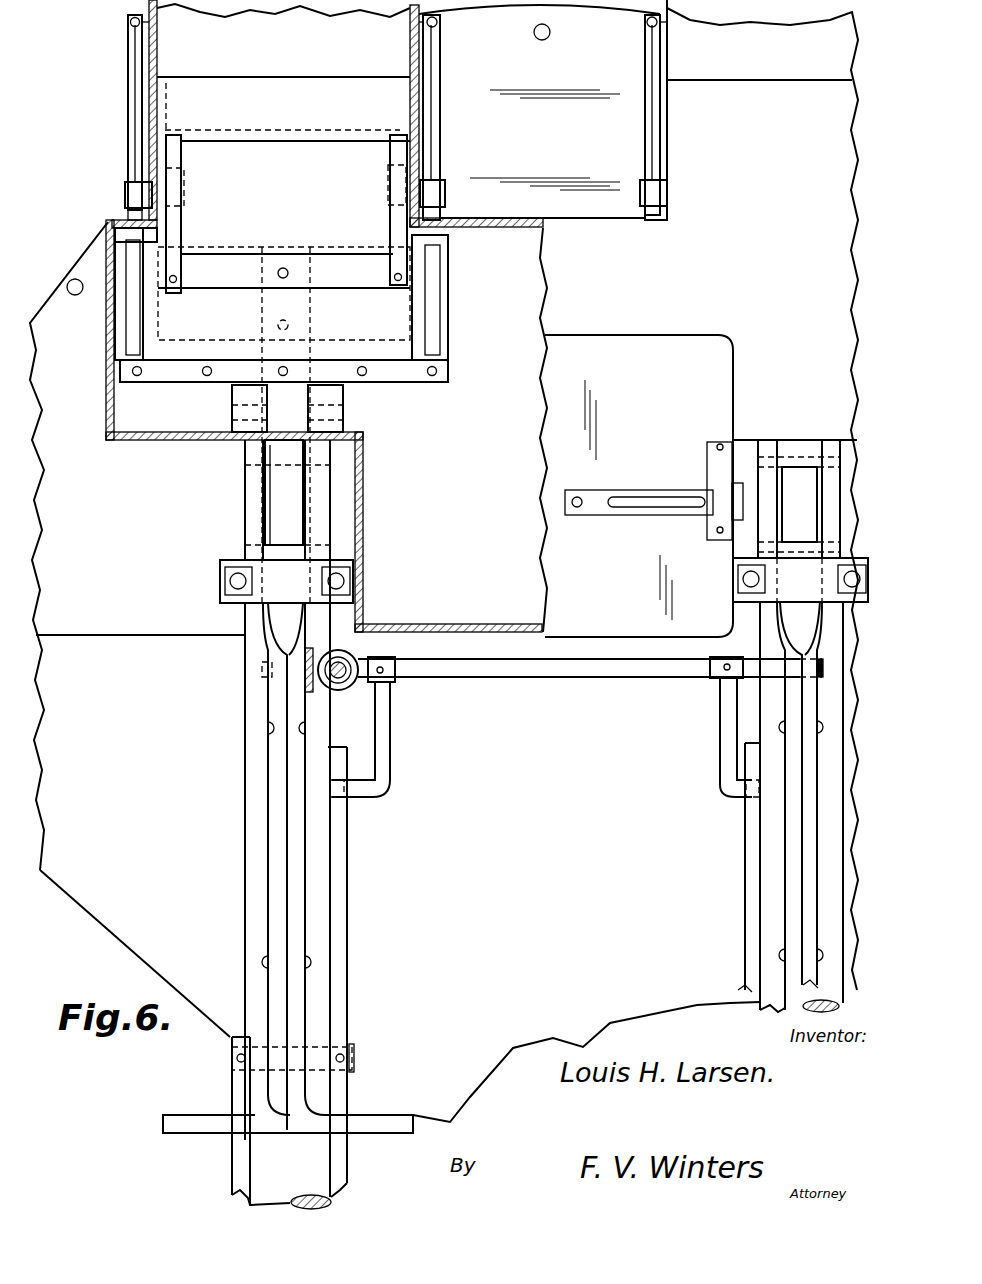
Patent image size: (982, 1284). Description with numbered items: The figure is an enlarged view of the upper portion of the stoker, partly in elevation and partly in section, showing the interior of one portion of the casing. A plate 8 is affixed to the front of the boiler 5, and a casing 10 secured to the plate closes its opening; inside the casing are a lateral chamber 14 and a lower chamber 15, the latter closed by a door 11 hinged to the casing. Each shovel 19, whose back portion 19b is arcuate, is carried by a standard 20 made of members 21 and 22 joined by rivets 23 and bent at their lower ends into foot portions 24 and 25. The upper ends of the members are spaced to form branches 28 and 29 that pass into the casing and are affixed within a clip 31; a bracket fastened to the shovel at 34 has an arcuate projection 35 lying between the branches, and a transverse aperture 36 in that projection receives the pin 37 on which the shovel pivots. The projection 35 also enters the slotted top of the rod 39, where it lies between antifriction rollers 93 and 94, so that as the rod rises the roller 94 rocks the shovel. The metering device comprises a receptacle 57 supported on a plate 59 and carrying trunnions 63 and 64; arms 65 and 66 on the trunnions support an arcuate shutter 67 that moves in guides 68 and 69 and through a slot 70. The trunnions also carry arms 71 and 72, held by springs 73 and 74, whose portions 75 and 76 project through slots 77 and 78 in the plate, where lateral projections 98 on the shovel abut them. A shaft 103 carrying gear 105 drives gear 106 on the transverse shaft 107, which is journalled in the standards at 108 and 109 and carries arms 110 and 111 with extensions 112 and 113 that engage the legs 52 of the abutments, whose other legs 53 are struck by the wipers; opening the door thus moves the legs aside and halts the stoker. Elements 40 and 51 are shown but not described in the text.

The boiler 5 is at (80, 907).
The plate 8 is at (140, 606).
The casing 10 is at (639, 272).
The door 11 is at (735, 397).
The lateral chamber 14 is at (143, 436).
The chamber 15 is at (448, 591).
The shovel 19 is at (175, 322).
The back portion of shovel 19b is at (366, 340).
The standard 20 is at (266, 930).
The member of standard 21 is at (305, 855).
The member of standard 22 is at (268, 830).
The rivets 23 is at (262, 729).
The foot portion 24 is at (190, 1115).
The foot portion 25 is at (392, 1133).
The branch of fork 28 is at (325, 508).
The branch of fork 29 is at (245, 505).
The clip 31 is at (232, 395).
The bracket fastening 34 is at (290, 278).
The arcuate projection 35 is at (775, 515).
The transverse aperture 36 is at (284, 492).
The pin 37 is at (345, 406).
The rod 39 is at (330, 890).
The mounting plate 40 is at (225, 600).
The clamp bracket 51 is at (356, 1056).
The leg of abutment 52 is at (348, 953).
The leg of abutment 53 is at (233, 1178).
The receptacle 57 is at (280, 80).
The plate 59 is at (420, 297).
The trunnion 63 is at (447, 193).
The trunnion 64 is at (125, 190).
The arm 65 is at (387, 185).
The arm 66 is at (185, 185).
The arcuate shutter 67 is at (287, 229).
The guide 68 is at (390, 228).
The guide 69 is at (182, 221).
The slot 70 is at (312, 140).
The arm 71 is at (440, 70).
The arm 72 is at (128, 85).
The spring 73 is at (445, 22).
The spring 74 is at (128, 24).
The arm portion 75 is at (440, 230).
The arm portion 76 is at (115, 235).
The slot 77 is at (440, 333).
The slot 78 is at (130, 322).
The antifriction roller 93 is at (258, 466).
The antifriction roller 94 is at (262, 548).
The projections 98 is at (182, 277).
The shaft 103 is at (340, 678).
The gear 105 is at (356, 662).
The gear 106 is at (305, 655).
The transverse shaft 107 is at (540, 678).
The journal 108 is at (262, 677).
The journal 109 is at (762, 659).
The arm 110 is at (392, 722).
The arm 111 is at (720, 770).
The extension 112 is at (368, 797).
The extension 113 is at (745, 797).